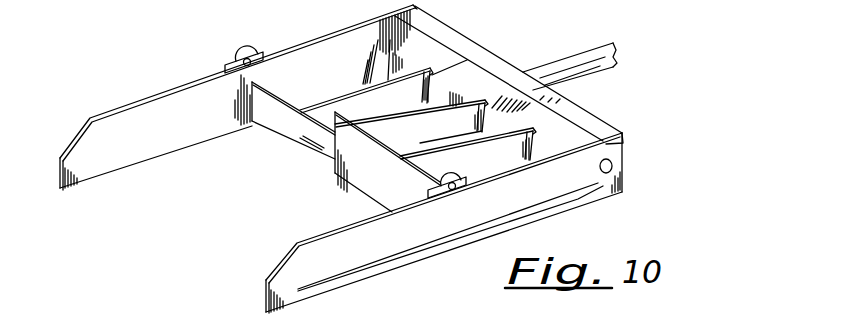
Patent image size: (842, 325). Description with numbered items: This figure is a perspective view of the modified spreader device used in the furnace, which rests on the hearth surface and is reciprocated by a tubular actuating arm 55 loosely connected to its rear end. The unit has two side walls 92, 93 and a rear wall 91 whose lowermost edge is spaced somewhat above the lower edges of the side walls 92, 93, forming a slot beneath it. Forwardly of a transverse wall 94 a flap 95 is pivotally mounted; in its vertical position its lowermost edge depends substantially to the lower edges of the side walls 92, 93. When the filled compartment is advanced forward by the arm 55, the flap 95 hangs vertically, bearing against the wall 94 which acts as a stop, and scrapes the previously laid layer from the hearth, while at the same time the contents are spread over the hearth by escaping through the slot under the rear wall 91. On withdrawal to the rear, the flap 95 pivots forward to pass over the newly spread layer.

The tubular actuating arm 55 is at (573, 53).
The rear wall 91 is at (438, 93).
The side wall 92 is at (303, 53).
The side wall 93 is at (348, 237).
The wall 94 is at (290, 128).
The flap 95 is at (353, 167).